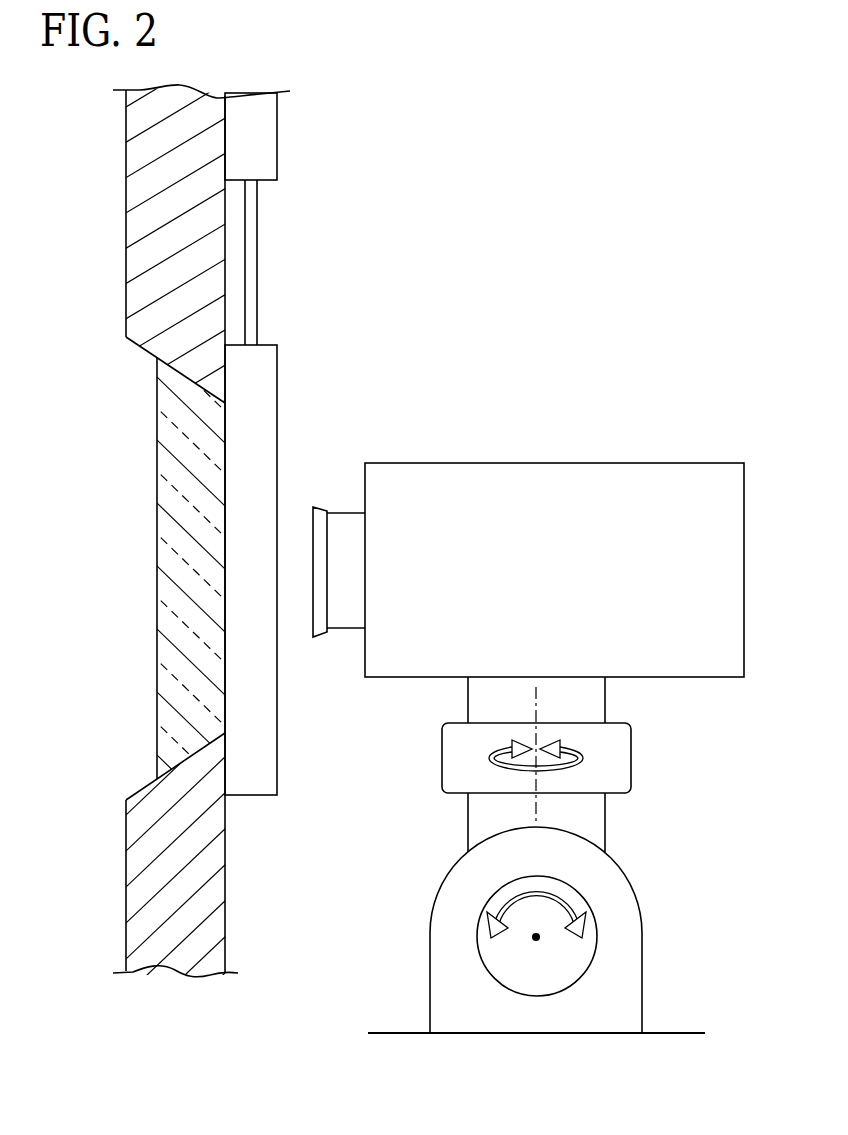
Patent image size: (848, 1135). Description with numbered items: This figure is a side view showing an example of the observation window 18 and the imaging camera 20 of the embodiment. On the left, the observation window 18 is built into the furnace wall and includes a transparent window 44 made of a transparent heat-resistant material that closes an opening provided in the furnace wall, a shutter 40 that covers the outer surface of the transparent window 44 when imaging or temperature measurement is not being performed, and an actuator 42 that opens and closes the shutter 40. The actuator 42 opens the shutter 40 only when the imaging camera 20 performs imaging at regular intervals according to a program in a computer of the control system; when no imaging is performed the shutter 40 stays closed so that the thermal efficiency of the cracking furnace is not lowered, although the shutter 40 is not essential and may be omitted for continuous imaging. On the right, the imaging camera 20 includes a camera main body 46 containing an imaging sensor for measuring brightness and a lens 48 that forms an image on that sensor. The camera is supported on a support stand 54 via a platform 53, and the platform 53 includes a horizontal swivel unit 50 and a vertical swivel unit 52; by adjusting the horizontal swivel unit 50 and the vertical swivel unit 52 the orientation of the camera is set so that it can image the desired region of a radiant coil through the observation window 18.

The observation window 18 is at (296, 444).
The imaging camera 20 is at (525, 522).
The shutter 40 is at (279, 376).
The actuator 42 is at (279, 139).
The transparent window 44 is at (157, 521).
The camera main body 46 is at (452, 462).
The lens 48 is at (322, 506).
The horizontal swivel unit 50 is at (632, 760).
The vertical swivel unit 52 is at (573, 930).
The platform 53 is at (599, 855).
The support stand 54 is at (392, 1031).